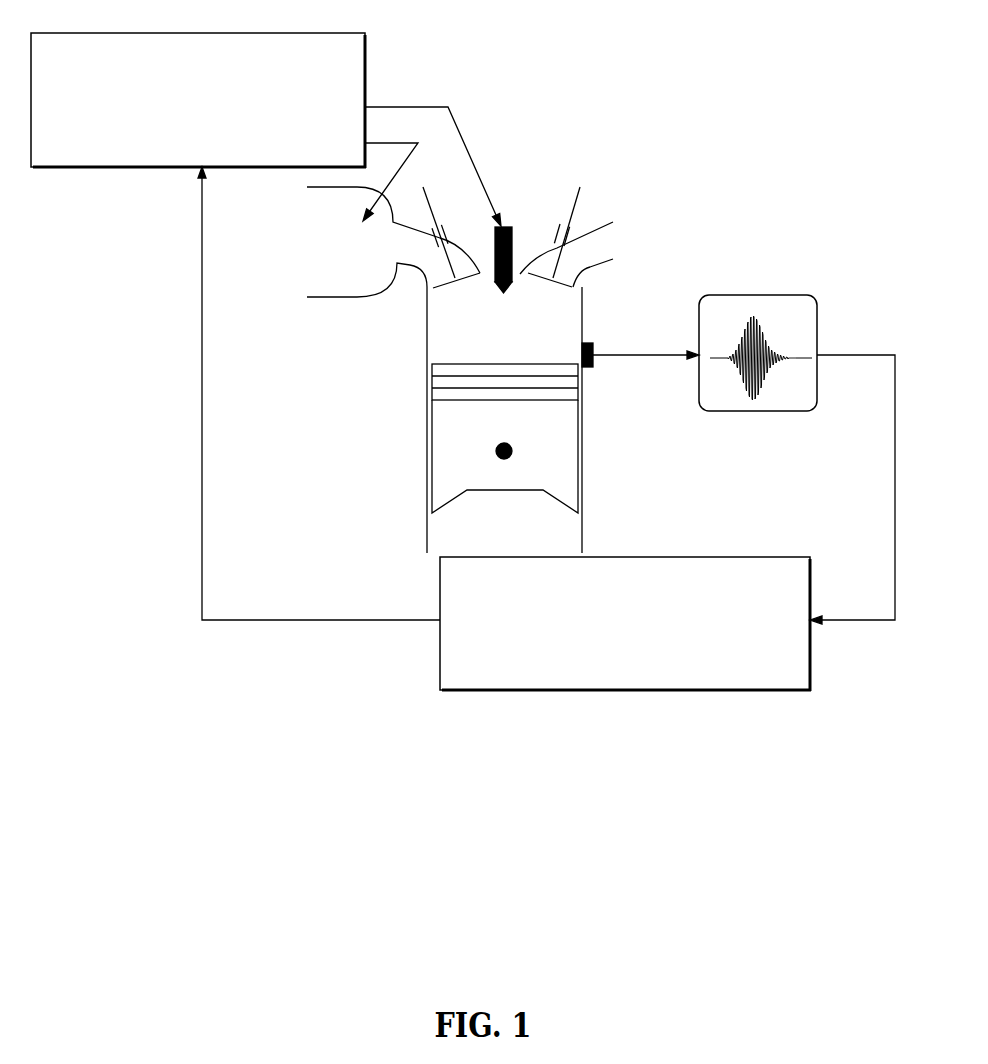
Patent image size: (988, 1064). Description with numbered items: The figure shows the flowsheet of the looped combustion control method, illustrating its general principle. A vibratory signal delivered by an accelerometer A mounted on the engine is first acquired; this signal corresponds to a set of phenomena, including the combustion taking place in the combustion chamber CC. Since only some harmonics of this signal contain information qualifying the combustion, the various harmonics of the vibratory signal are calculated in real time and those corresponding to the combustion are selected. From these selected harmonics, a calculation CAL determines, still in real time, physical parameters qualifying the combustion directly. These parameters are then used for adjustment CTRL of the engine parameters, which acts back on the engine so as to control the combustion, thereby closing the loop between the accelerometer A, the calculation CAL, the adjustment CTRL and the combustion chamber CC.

The adjustment of the engine parameters CTRL is at (198, 100).
The combustion chamber CC is at (460, 370).
The accelerometer A is at (612, 379).
The calculation CAL is at (625, 624).